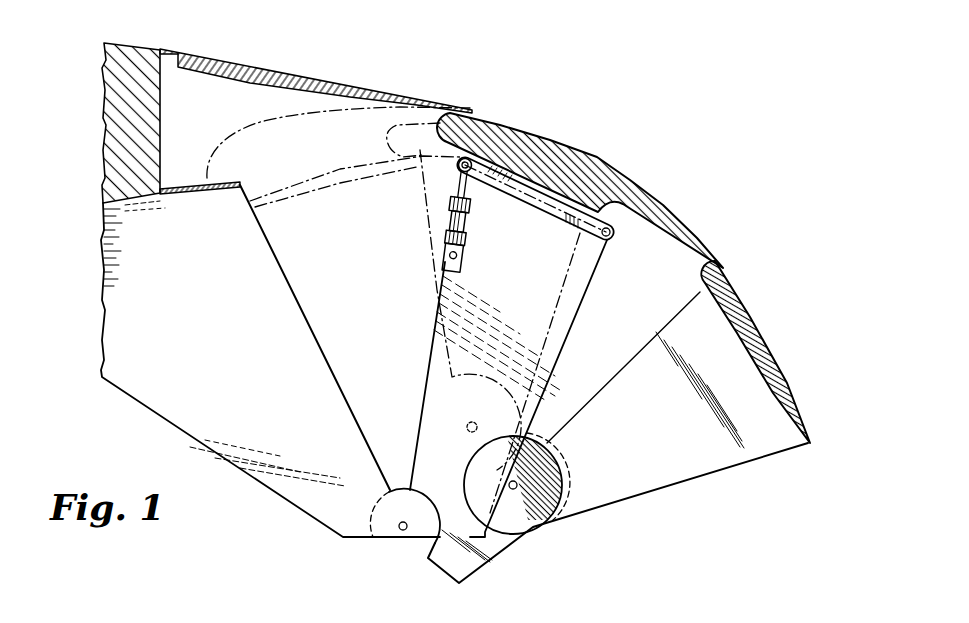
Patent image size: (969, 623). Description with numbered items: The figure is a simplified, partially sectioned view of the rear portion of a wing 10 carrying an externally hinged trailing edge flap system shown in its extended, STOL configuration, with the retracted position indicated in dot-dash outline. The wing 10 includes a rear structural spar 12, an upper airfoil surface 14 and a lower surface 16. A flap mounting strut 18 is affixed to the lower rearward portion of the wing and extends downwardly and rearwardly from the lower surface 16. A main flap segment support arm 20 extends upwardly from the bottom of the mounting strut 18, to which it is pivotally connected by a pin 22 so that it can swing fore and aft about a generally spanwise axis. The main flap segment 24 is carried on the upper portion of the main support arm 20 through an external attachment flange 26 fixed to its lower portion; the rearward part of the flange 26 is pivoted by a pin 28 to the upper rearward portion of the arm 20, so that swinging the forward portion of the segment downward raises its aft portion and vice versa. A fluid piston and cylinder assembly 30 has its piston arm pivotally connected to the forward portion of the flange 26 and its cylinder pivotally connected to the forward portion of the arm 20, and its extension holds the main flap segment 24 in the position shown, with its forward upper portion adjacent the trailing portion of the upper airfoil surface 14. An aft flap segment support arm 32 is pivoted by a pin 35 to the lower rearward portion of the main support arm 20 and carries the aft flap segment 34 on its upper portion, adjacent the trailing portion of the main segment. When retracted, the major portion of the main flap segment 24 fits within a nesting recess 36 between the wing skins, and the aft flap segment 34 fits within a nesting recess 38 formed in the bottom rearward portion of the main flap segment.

The wing 10 is at (150, 41).
The rear structural spar 12 is at (251, 290).
The upper airfoil surface 14 is at (316, 75).
The lower surface 16 is at (190, 197).
The flap mounting strut 18 is at (268, 294).
The main flap segment support arm 20 is at (499, 343).
The pin 22 is at (402, 530).
The main flap segment 24 is at (257, 138).
The external attachment flange 26 is at (333, 193).
The pin 28 is at (627, 245).
The fluid piston and cylinder assembly 30 is at (431, 214).
The aft flap segment support arm 32 is at (657, 477).
The aft flap segment 34 is at (595, 308).
The pin 35 is at (518, 485).
The nesting recess 36 is at (287, 104).
The nesting recess 38 is at (650, 225).